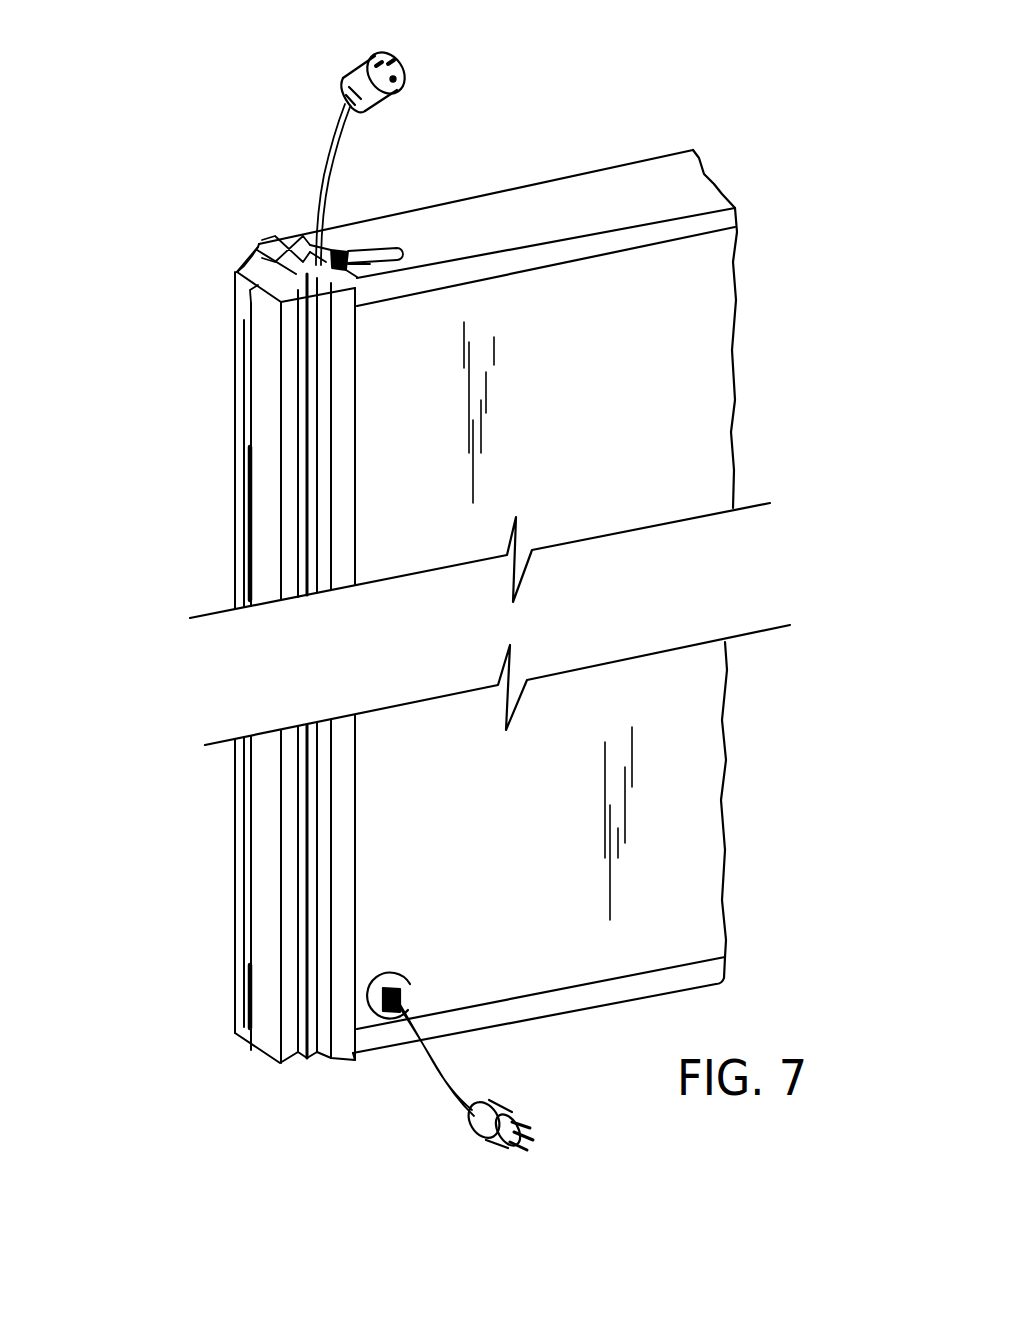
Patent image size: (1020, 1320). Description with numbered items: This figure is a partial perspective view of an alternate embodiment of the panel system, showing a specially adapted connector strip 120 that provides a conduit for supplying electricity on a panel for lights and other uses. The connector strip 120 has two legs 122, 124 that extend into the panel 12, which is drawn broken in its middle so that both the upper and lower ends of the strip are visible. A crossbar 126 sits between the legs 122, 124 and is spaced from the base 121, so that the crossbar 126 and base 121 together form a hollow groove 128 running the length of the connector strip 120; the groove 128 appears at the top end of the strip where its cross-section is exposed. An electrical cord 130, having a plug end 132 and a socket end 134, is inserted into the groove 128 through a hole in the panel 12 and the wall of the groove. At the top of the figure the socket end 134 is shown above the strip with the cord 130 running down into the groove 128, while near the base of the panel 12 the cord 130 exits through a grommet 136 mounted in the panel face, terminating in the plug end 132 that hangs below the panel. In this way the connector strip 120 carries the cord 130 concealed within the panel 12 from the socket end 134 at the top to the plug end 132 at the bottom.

The panel 12 is at (735, 270).
The connector strip 120 is at (200, 267).
The base 121 is at (275, 241).
The leg 122 is at (307, 233).
The leg 124 is at (404, 256).
The crossbar 126 is at (365, 257).
The hollow groove 128 is at (333, 233).
The electrical cord 130 is at (347, 117).
The plug end 132 is at (473, 1135).
The socket end 134 is at (360, 72).
The grommet 136 is at (388, 978).